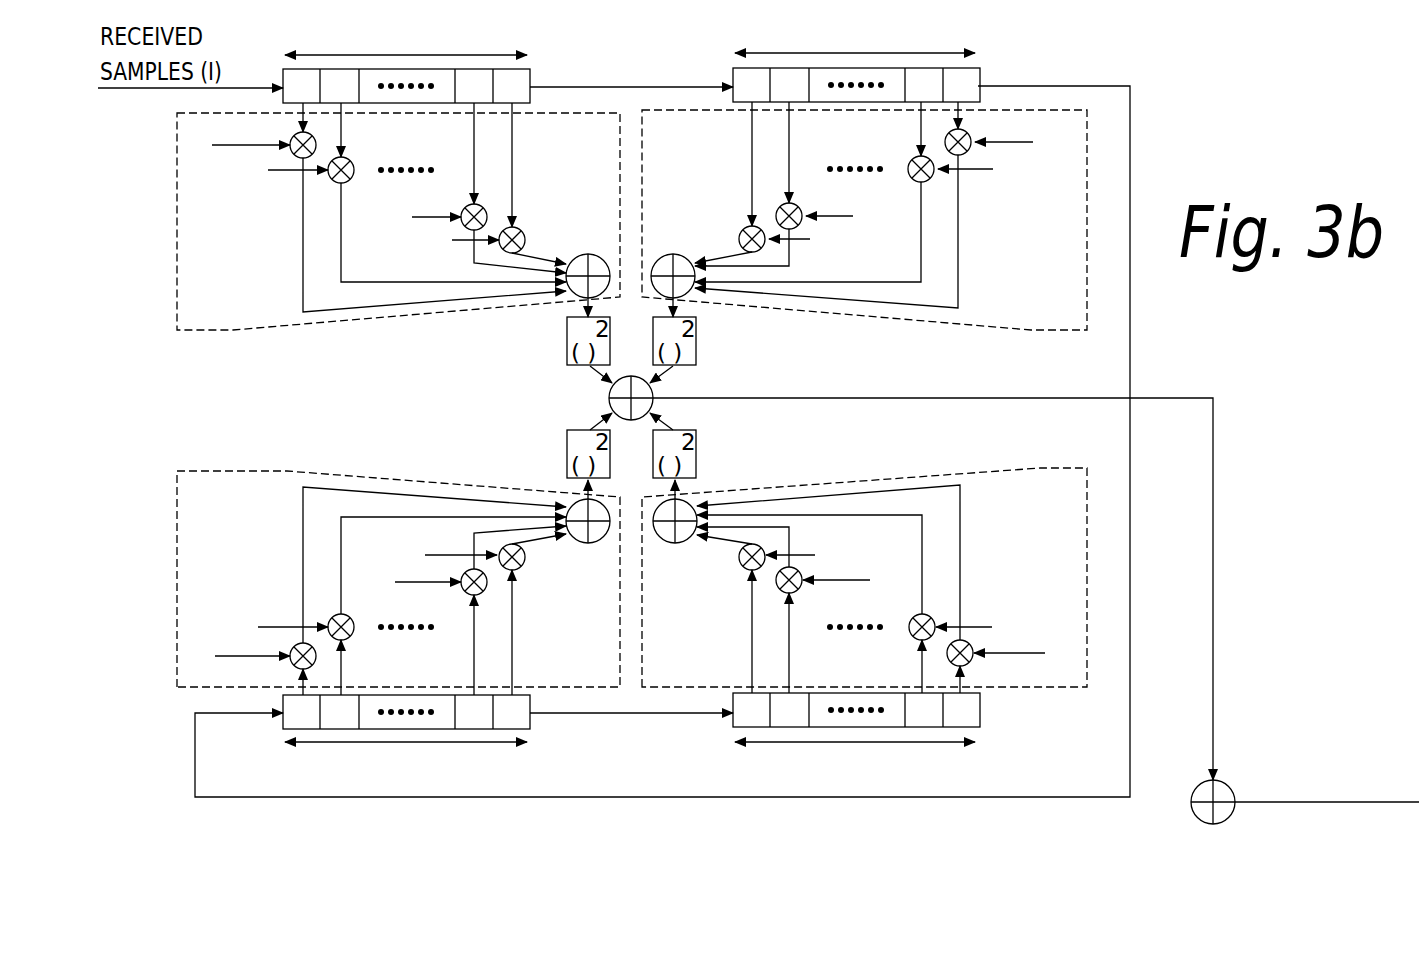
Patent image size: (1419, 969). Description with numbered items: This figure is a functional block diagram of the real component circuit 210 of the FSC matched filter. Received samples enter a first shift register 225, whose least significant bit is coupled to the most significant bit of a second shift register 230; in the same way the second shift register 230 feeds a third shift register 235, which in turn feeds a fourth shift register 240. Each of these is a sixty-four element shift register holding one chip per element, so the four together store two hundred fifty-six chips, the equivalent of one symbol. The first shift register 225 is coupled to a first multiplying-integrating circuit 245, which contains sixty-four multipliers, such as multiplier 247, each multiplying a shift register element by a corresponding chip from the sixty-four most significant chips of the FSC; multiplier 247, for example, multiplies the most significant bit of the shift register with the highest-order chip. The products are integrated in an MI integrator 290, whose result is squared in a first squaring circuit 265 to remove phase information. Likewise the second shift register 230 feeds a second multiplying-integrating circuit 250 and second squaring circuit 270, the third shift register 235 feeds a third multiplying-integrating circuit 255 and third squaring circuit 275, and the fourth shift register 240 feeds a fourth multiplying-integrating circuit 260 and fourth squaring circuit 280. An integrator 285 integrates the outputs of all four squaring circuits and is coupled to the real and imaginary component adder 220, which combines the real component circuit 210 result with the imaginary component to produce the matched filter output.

The real component circuit 210 is at (1306, 67).
The real and imaginary component adder 220 is at (1226, 782).
The first shift register 225 is at (530, 73).
The second shift register 230 is at (978, 72).
The third shift register 235 is at (530, 720).
The fourth shift register 240 is at (978, 700).
The first multiplying-integrating circuit 245 is at (398, 257).
The multiplier 247 is at (316, 140).
The second multiplying-integrating circuit 250 is at (1031, 330).
The third multiplying-integrating circuit 255 is at (287, 471).
The fourth multiplying-integrating circuit 260 is at (1045, 462).
The first squaring circuit 265 is at (567, 340).
The second squaring circuit 270 is at (696, 340).
The third squaring circuit 275 is at (567, 440).
The fourth squaring circuit 280 is at (696, 440).
The integrator 285 is at (653, 390).
The MI integrator 290 is at (585, 255).